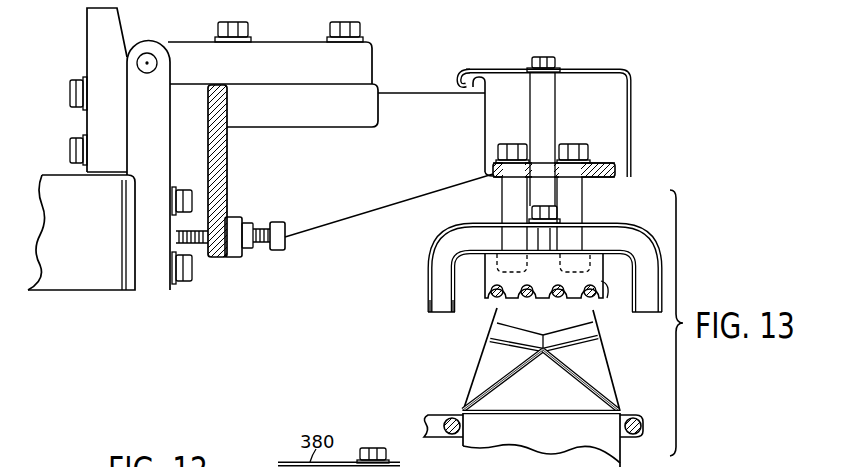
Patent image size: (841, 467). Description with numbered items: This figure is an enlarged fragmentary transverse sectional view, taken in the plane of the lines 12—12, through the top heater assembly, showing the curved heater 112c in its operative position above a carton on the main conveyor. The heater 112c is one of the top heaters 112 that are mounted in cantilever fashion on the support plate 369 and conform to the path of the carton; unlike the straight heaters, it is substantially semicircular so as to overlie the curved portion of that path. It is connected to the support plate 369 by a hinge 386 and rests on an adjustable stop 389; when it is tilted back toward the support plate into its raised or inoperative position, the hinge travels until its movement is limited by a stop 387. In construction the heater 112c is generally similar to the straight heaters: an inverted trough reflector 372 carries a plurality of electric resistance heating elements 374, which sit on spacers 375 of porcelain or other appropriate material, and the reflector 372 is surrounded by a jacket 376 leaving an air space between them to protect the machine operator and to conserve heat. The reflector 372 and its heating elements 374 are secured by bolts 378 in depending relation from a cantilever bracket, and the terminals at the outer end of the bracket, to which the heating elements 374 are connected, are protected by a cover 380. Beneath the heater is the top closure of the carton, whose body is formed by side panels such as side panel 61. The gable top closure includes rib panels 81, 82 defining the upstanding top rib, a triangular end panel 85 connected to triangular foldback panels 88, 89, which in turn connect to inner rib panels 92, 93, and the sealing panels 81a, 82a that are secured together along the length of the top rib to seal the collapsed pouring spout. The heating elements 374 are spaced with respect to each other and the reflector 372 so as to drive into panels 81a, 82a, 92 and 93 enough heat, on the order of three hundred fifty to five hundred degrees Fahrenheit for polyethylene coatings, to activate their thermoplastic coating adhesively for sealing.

The vehicle 12 is at (186, 0).
The side panel 61 is at (552, 443).
The rib panel 81 is at (602, 331).
The sealing panel 81a is at (591, 310).
The rib panel 82 is at (494, 330).
The sealing panel 82a is at (500, 309).
The triangular end panel 85 is at (502, 395).
The triangular foldback panel 88 is at (486, 367).
The triangular foldback panel 89 is at (603, 370).
The inner rib panel 92 is at (491, 340).
The inner rib panel 93 is at (581, 336).
The top heater 112 is at (381, 21).
The heater 112c is at (421, 305).
The support plate 369 is at (58, 283).
The inverted trough reflector 372 is at (458, 288).
The electric resistance heating elements 374 is at (556, 289).
The spacers 375 is at (605, 298).
The jacket 376 is at (617, 227).
The bolts 378 is at (506, 143).
The cover 380 is at (629, 72).
The hinge 386 is at (175, 57).
The stop 387 is at (97, 22).
The adjustable stop 389 is at (203, 252).